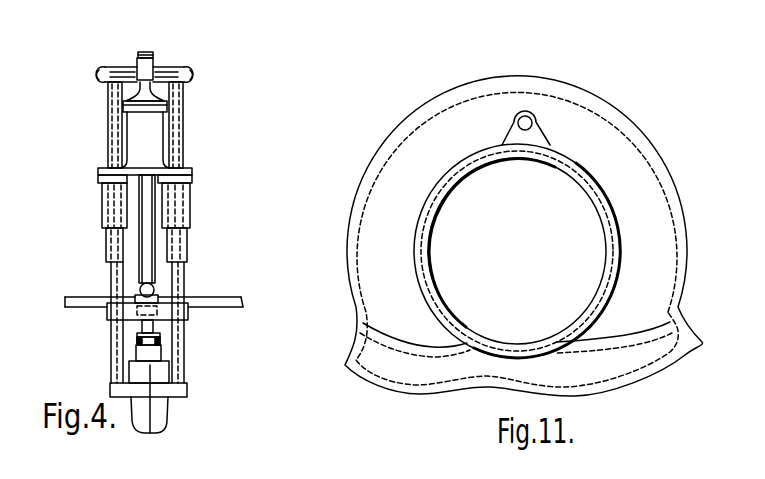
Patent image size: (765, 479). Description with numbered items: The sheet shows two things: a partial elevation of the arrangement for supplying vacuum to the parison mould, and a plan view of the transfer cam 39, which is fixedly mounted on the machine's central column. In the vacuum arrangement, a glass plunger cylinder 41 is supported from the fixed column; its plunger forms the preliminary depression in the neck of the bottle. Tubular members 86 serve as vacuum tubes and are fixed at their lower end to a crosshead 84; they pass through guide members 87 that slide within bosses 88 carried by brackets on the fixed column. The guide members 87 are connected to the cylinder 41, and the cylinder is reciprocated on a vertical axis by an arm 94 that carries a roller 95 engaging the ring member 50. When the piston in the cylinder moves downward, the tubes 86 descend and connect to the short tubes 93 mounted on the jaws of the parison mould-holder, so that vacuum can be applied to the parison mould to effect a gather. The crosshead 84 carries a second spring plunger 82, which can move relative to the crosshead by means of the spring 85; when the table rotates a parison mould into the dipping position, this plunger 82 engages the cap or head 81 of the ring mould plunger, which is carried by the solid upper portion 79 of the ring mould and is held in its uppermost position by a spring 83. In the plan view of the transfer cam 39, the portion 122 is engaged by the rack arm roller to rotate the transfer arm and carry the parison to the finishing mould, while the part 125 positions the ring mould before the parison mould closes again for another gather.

In FIG. 4, the tubular members 86 is at (113, 122).
In FIG. 4, the glass plunger cylinder 41 is at (152, 137).
In FIG. 4, the bosses 88 is at (117, 210).
In FIG. 4, the guide members 87 is at (117, 242).
In FIG. 4, the arm 94 is at (148, 238).
In FIG. 4, the roller 95 is at (140, 288).
In FIG. 4, the ring member 50 is at (218, 299).
In FIG. 4, the crosshead 84 is at (187, 312).
In FIG. 4, the spring 85 is at (138, 306).
In FIG. 4, the cap or head 81 is at (135, 337).
In FIG. 4, the second spring plunger 82 is at (152, 323).
In FIG. 4, the spring 83 is at (137, 340).
In FIG. 4, the upper portion of the ring mould 79 is at (150, 353).
In FIG. 4, the short tubes 93 is at (187, 377).
In FIG. 11, the transfer cam 39 is at (398, 248).
In FIG. 11, the portion of the transfer cam 122 is at (660, 363).
In FIG. 11, the part of the transfer cam 125 is at (418, 382).